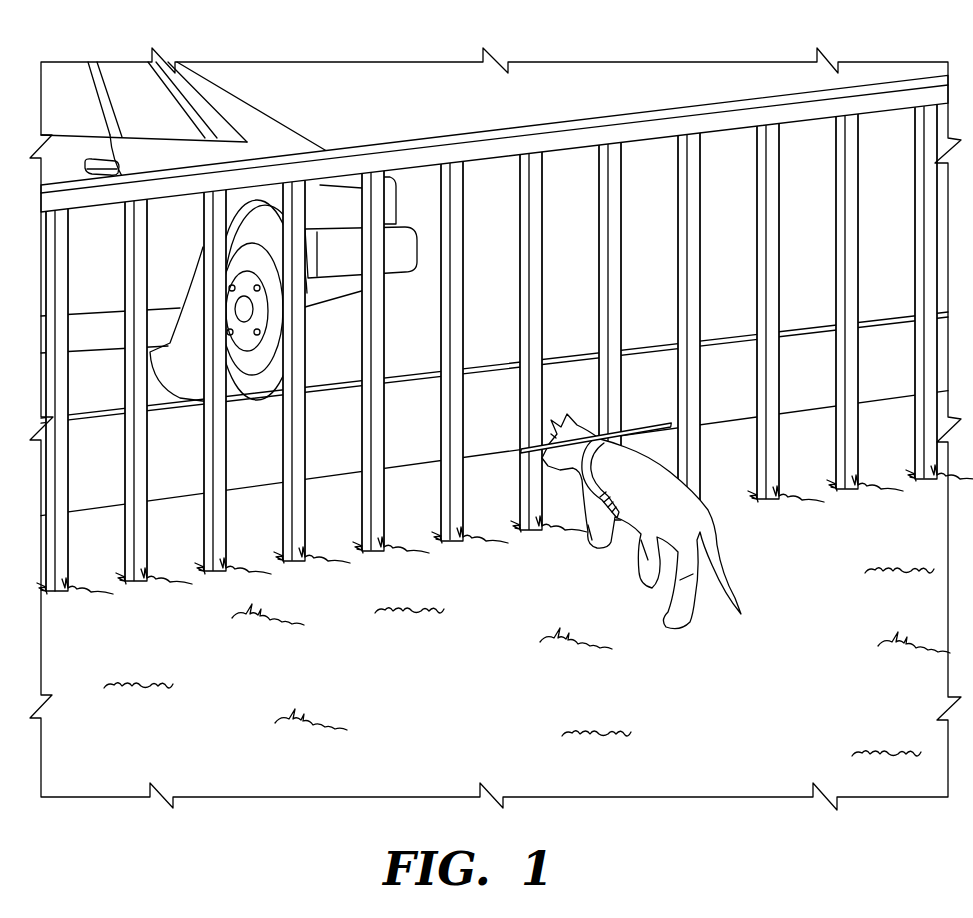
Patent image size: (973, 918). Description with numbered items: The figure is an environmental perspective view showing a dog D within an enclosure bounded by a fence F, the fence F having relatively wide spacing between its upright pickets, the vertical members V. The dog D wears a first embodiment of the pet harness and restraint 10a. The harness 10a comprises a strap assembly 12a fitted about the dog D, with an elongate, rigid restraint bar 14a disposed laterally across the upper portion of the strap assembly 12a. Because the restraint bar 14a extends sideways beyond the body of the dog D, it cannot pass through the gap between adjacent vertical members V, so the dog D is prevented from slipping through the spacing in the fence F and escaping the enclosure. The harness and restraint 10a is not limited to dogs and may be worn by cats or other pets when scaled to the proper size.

The pet harness and restraint 10a is at (596, 489).
The strap assembly 12a is at (598, 460).
The restraint bar 14a is at (631, 428).
The dog D is at (738, 649).
The fence F is at (494, 333).
The vertical members V is at (542, 256).